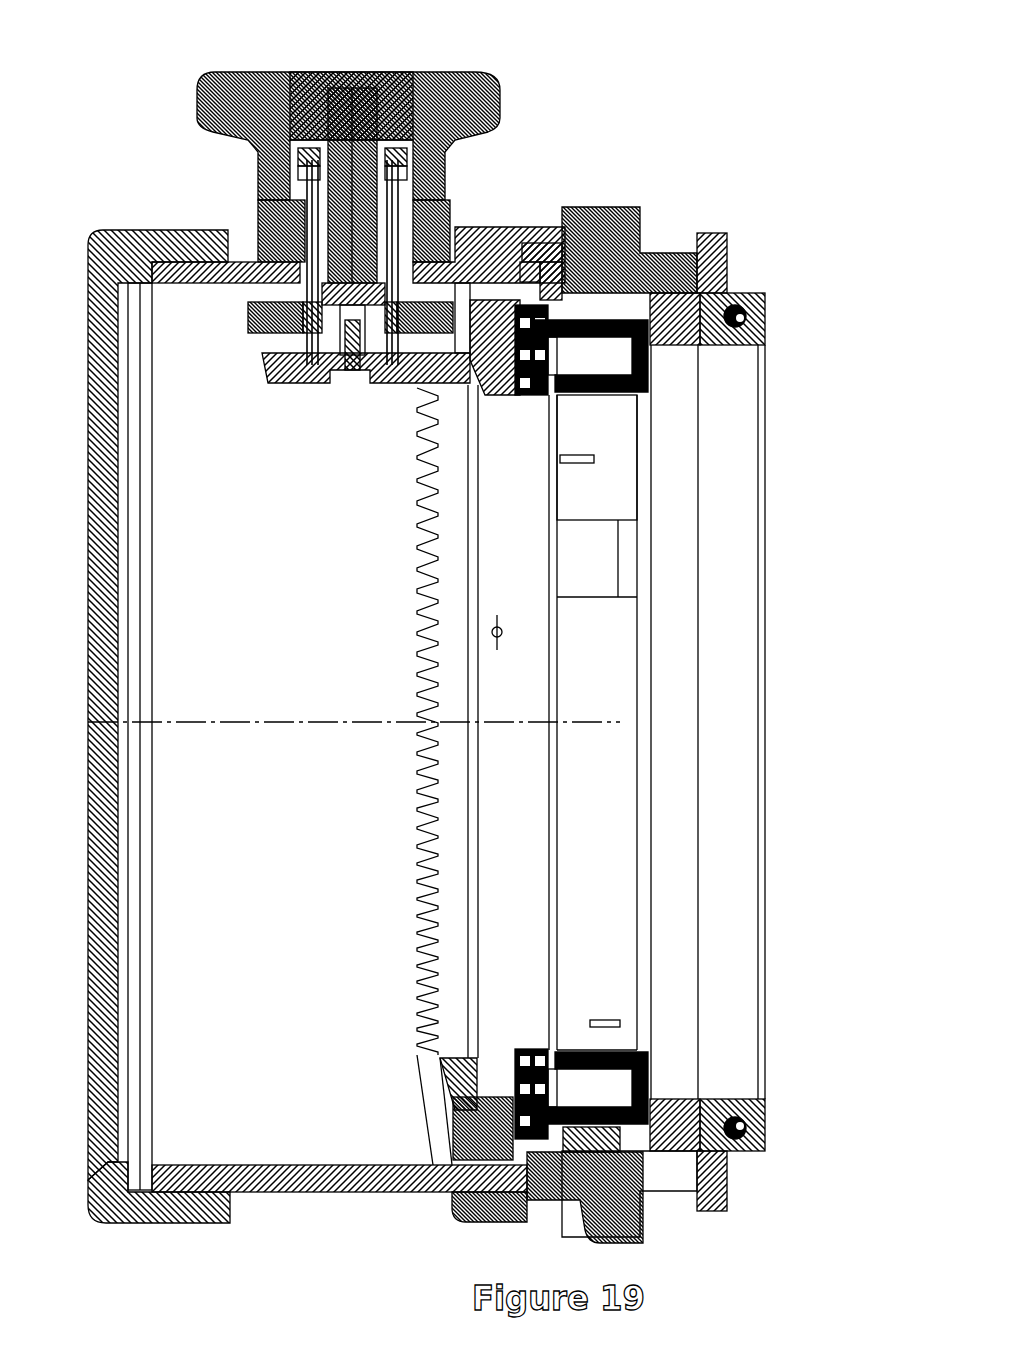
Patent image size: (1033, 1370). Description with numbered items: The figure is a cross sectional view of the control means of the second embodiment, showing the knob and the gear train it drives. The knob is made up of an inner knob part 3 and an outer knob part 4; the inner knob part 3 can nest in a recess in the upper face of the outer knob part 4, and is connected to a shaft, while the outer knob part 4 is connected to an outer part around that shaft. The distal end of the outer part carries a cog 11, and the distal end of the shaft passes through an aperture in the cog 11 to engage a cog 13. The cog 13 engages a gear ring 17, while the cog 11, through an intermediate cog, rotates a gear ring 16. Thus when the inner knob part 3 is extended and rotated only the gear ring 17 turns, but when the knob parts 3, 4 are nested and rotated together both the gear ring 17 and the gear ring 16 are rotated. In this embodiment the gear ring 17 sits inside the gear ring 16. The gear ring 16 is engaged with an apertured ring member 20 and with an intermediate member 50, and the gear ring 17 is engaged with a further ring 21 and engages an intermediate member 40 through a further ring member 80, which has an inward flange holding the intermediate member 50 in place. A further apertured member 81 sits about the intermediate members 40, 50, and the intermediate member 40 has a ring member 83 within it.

The inner knob part 3 is at (307, 69).
The outer knob part 4 is at (456, 70).
The cog 11 is at (258, 291).
The cog 13 is at (254, 348).
The gear ring 16 is at (450, 289).
The gear ring 17 is at (408, 401).
The apertured ring member 20 is at (633, 315).
The further ring 21 is at (600, 312).
The intermediate member 40 is at (511, 392).
The intermediate member 50 is at (529, 306).
The further ring member 80 is at (489, 356).
The further apertured member 81 is at (555, 260).
The ring member 83 is at (470, 345).